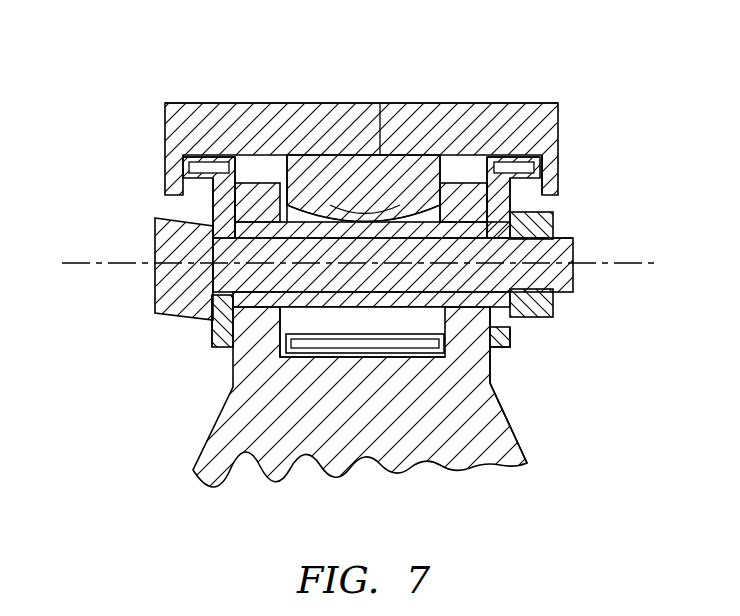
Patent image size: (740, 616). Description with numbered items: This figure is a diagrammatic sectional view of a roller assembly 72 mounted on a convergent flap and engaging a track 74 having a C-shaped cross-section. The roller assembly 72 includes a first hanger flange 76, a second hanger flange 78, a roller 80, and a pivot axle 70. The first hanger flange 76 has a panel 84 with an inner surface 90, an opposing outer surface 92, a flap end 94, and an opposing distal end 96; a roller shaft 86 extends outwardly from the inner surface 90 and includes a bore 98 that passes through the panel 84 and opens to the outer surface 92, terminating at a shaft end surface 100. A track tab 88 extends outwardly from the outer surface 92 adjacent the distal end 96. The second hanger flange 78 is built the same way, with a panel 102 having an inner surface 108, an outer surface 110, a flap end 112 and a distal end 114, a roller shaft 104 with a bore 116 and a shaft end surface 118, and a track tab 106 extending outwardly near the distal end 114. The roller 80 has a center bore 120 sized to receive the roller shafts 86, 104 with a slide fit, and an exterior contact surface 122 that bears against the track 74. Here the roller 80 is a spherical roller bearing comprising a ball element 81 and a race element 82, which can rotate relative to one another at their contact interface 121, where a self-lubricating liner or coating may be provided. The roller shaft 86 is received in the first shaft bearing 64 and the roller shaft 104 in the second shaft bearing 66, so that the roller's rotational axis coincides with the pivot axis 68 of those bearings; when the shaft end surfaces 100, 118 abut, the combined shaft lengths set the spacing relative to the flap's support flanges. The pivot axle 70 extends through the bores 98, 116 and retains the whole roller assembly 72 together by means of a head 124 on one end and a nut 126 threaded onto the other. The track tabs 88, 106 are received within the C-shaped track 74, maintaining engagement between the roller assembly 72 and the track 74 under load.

The first shaft bearing 64 is at (243, 162).
The second shaft bearing 66 is at (450, 183).
The pivot axis 68 is at (658, 262).
The pivot axle 70 is at (577, 283).
The roller assembly 72 is at (116, 128).
The track 74 is at (576, 83).
The first hanger flange 76 is at (206, 202).
The second hanger flange 78 is at (546, 182).
The roller 80 is at (245, 385).
The ball element 81 is at (383, 103).
The race element 82 is at (400, 160).
The panel 84 is at (208, 336).
The roller shaft 86 is at (326, 195).
The track tab 88 is at (205, 155).
The inner surface 90 is at (178, 162).
The outer surface 92 is at (205, 212).
The flap end 94 is at (225, 347).
The distal end 96 is at (266, 150).
The bore 98 is at (220, 253).
The shaft end surface 100 is at (368, 342).
The panel 102 is at (518, 340).
The roller shaft 104 is at (418, 350).
The track tab 106 is at (530, 150).
The inner surface 108 is at (489, 160).
The outer surface 110 is at (515, 200).
The flap end 112 is at (505, 357).
The distal end 114 is at (522, 150).
The bore 116 is at (512, 321).
The shaft end surface 118 is at (322, 357).
The center bore 120 is at (570, 245).
The contact interface 121 is at (360, 150).
The exterior contact surface 122 is at (432, 165).
The head 124 is at (163, 318).
The nut 126 is at (548, 305).